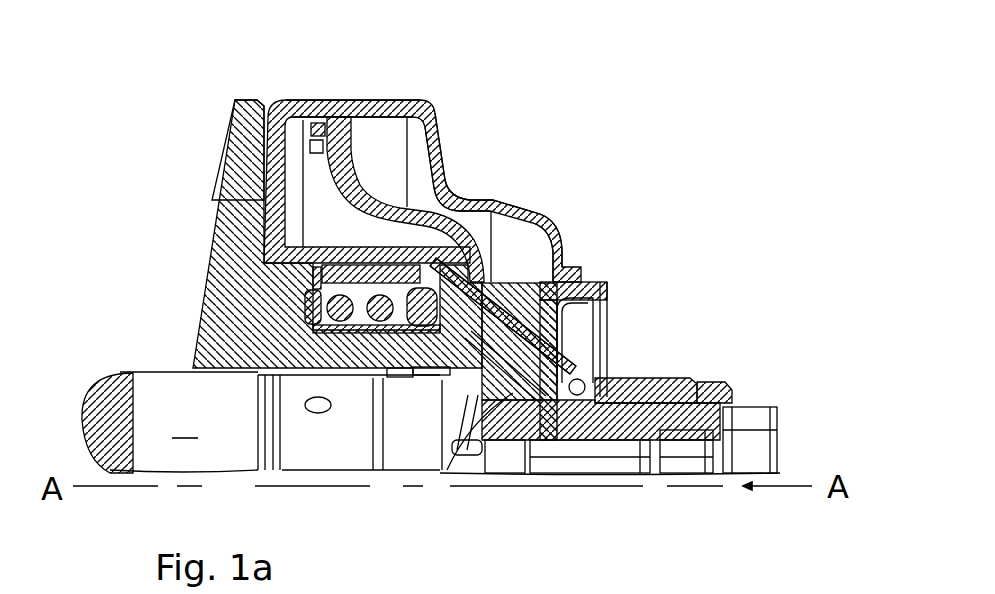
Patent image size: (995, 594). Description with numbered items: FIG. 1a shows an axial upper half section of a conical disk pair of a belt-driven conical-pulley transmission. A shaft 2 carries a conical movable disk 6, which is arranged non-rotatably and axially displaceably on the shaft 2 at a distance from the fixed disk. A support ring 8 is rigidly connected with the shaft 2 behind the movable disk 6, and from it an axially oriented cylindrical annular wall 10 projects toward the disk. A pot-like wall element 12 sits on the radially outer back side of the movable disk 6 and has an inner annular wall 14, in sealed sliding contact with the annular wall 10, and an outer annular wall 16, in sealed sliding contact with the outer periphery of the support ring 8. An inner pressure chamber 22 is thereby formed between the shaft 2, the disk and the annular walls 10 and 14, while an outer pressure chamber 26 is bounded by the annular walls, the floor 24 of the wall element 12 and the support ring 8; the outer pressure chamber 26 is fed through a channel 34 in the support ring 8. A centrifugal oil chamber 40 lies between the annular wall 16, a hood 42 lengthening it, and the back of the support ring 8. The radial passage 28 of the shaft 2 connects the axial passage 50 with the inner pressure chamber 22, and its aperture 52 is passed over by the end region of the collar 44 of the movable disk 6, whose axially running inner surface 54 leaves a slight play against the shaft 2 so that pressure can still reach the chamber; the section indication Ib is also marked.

The shaft 2 is at (170, 422).
The movable disk 6 is at (222, 198).
The support ring 8 is at (480, 253).
The annular wall 10 is at (467, 253).
The wall element 12 is at (271, 101).
The inner annular wall 14 is at (293, 238).
The outer annular wall 16 is at (358, 100).
The inner pressure chamber 22 is at (320, 283).
The floor 24 is at (237, 148).
The outer pressure chamber 26 is at (312, 162).
The radial passage 28 is at (473, 427).
The channel 34 is at (557, 327).
The centrifugal oil chamber 40 is at (385, 157).
The hood 42 is at (432, 153).
The collar 44 is at (510, 290).
The axial passage 50 is at (753, 437).
The aperture 52 is at (597, 357).
The inner surface 54 is at (473, 430).
The section line Ib is at (578, 337).